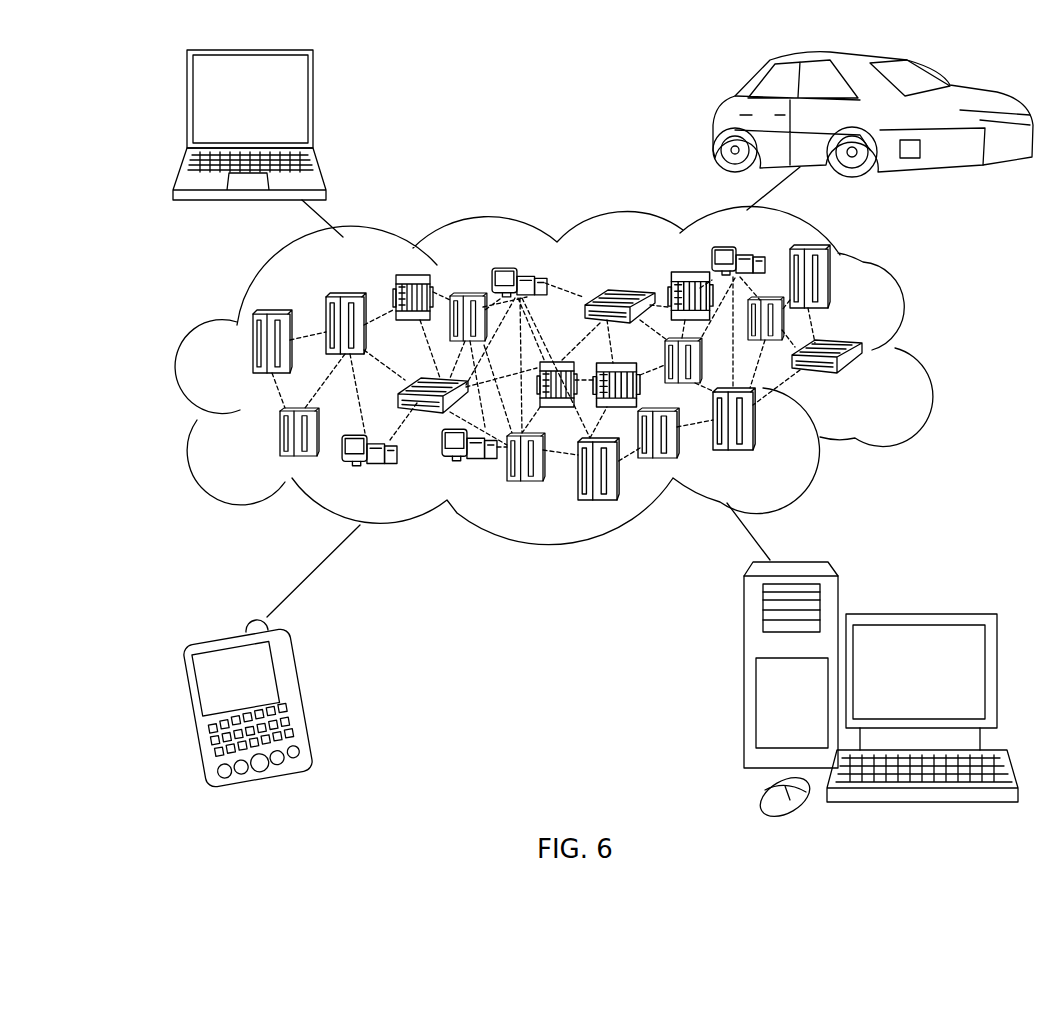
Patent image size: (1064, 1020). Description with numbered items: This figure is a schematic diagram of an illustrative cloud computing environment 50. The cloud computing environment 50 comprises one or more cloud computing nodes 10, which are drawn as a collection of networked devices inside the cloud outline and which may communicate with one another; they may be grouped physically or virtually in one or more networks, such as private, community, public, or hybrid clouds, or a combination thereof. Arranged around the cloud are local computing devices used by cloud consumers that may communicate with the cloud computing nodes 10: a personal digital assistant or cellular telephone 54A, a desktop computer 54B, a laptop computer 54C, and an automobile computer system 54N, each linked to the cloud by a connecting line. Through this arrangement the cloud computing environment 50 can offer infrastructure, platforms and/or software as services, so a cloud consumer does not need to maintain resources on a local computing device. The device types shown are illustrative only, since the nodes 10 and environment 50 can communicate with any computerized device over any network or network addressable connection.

The cloud computing node 10 is at (876, 386).
The cloud computing environment 50 is at (917, 355).
The personal digital assistant (PDA) or cellular telephone 54A is at (305, 698).
The desktop computer 54B is at (918, 613).
The laptop computer 54C is at (313, 107).
The automobile computer system 54N is at (715, 118).